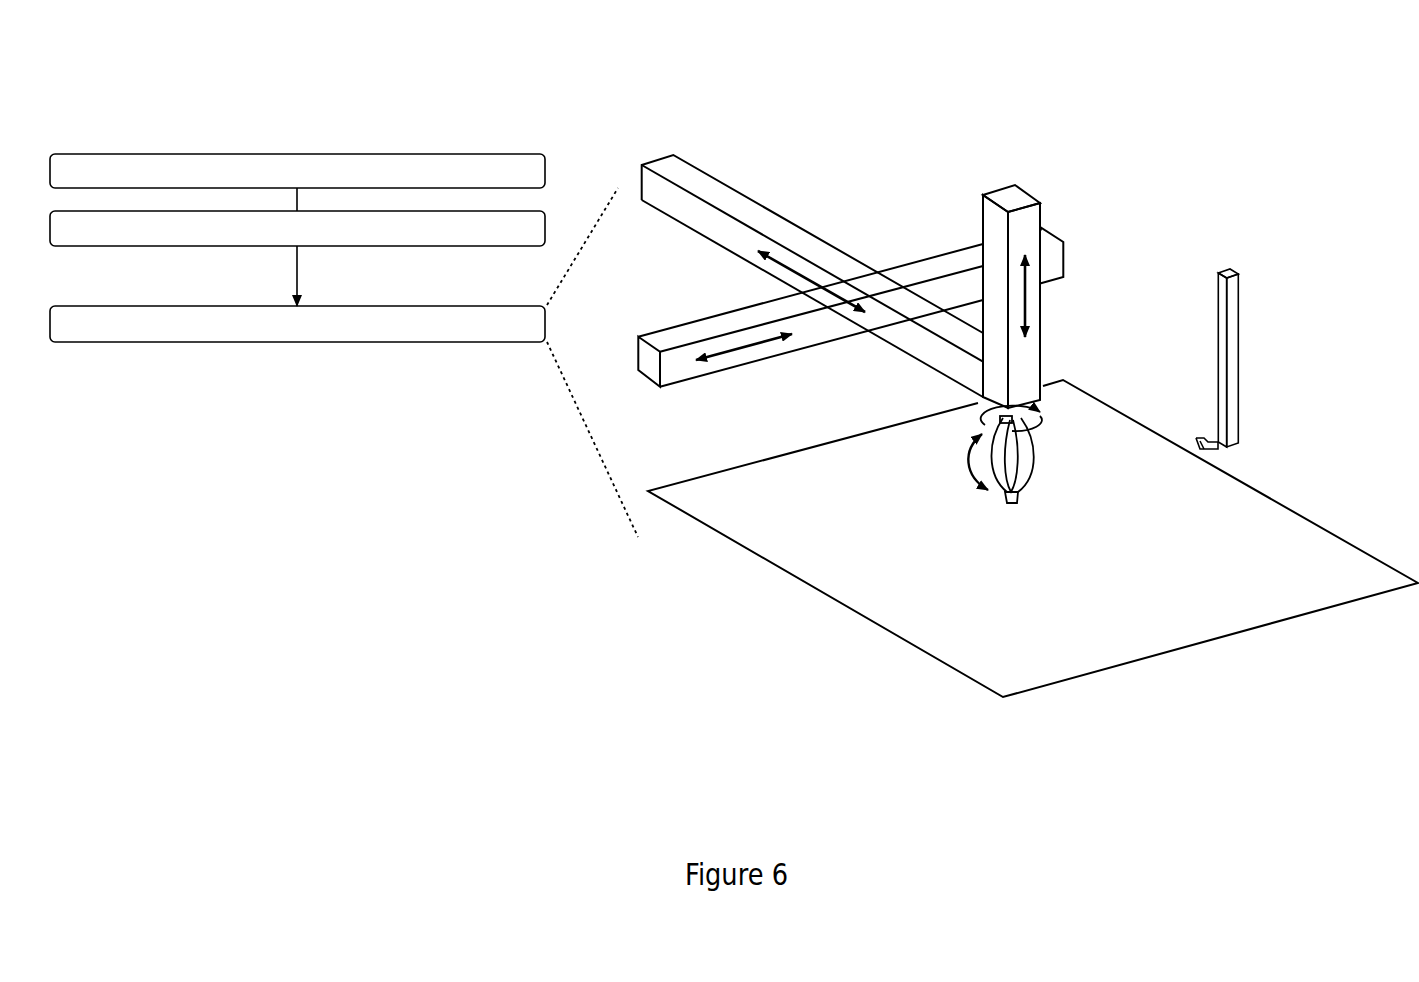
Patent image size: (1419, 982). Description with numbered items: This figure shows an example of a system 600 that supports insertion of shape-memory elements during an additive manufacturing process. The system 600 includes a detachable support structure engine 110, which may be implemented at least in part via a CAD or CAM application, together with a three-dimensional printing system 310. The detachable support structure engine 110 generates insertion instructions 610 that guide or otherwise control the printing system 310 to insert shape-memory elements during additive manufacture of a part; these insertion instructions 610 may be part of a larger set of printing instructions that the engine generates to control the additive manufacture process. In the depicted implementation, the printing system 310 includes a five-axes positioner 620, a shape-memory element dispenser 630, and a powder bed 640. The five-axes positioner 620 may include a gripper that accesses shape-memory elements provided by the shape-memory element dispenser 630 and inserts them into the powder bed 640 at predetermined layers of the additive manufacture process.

The system 600 is at (133, 73).
The detachable support structure engine 110 is at (538, 180).
The insertion instructions 610 is at (373, 236).
The 3D printing system 310 is at (538, 331).
The 5-axes positioner 620 is at (815, 208).
The shape-memory element dispenser 630 is at (1218, 300).
The powder bed 640 is at (1095, 595).